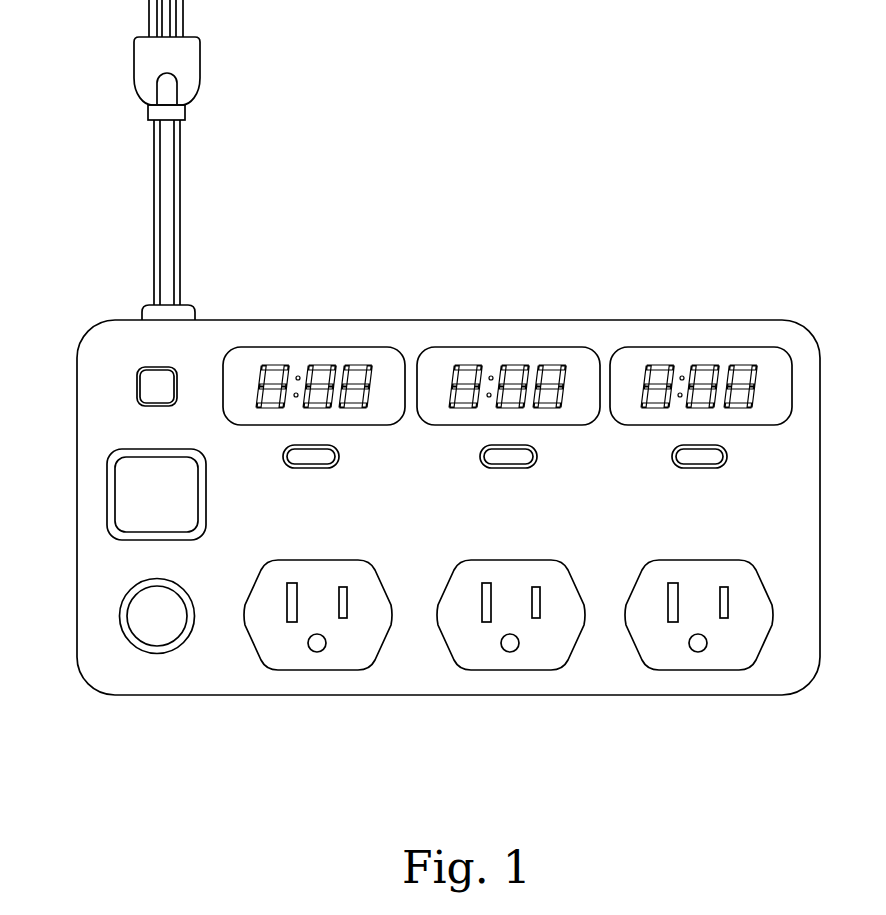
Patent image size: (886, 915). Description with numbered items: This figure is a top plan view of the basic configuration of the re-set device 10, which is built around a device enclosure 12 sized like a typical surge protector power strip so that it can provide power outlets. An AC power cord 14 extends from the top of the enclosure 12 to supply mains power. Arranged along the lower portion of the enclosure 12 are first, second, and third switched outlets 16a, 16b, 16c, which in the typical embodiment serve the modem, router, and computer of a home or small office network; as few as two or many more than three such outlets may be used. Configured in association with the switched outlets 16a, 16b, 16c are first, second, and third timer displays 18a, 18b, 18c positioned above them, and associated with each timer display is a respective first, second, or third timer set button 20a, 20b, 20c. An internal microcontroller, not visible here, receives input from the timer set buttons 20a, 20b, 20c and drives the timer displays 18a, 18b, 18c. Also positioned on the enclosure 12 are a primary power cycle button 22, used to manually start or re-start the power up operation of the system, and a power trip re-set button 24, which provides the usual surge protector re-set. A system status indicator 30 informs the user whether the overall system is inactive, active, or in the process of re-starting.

The re-set device 10 is at (612, 128).
The device enclosure 12 is at (207, 695).
The AC power cord 14 is at (177, 170).
The first switched outlet 16a is at (292, 670).
The second switched outlet 16b is at (488, 670).
The third switched outlet 16c is at (665, 670).
The first timer display 18a is at (363, 347).
The second timer display 18b is at (555, 347).
The third timer display 18c is at (755, 347).
The first timer set button 20a is at (313, 468).
The second timer set button 20b is at (507, 468).
The third timer set button 20c is at (700, 468).
The power cycle button 22 is at (107, 492).
The power trip re-set button 24 is at (137, 380).
The system status indicator 30 is at (119, 617).